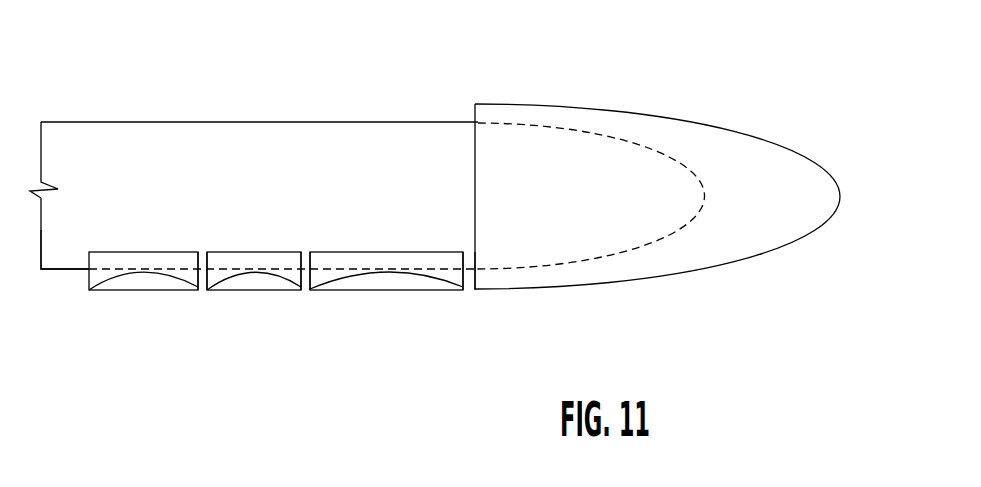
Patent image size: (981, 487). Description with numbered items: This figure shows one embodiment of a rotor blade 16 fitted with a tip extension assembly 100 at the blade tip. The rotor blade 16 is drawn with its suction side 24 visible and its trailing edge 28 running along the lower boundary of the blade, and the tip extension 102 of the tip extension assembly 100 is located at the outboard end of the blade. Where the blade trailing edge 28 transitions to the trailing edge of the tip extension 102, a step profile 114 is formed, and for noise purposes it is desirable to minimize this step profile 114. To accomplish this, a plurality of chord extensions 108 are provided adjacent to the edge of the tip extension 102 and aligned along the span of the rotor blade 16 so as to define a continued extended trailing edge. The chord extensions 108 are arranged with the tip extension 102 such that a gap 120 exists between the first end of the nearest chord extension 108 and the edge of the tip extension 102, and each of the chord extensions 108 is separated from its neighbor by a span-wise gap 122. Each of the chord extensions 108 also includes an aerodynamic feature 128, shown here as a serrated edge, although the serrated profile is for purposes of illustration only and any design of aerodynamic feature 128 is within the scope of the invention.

The tip extension assembly 100 is at (669, 85).
The tip extension 102 is at (692, 248).
The rotor blade 16 is at (433, 112).
The suction side 24 is at (336, 146).
The trailing edge 28 is at (63, 271).
The chord extension 108 is at (389, 242).
The step profile 114 is at (481, 299).
The gap 120 is at (468, 290).
The span-wise gap 122 is at (205, 292).
The aerodynamic feature 128 is at (142, 288).